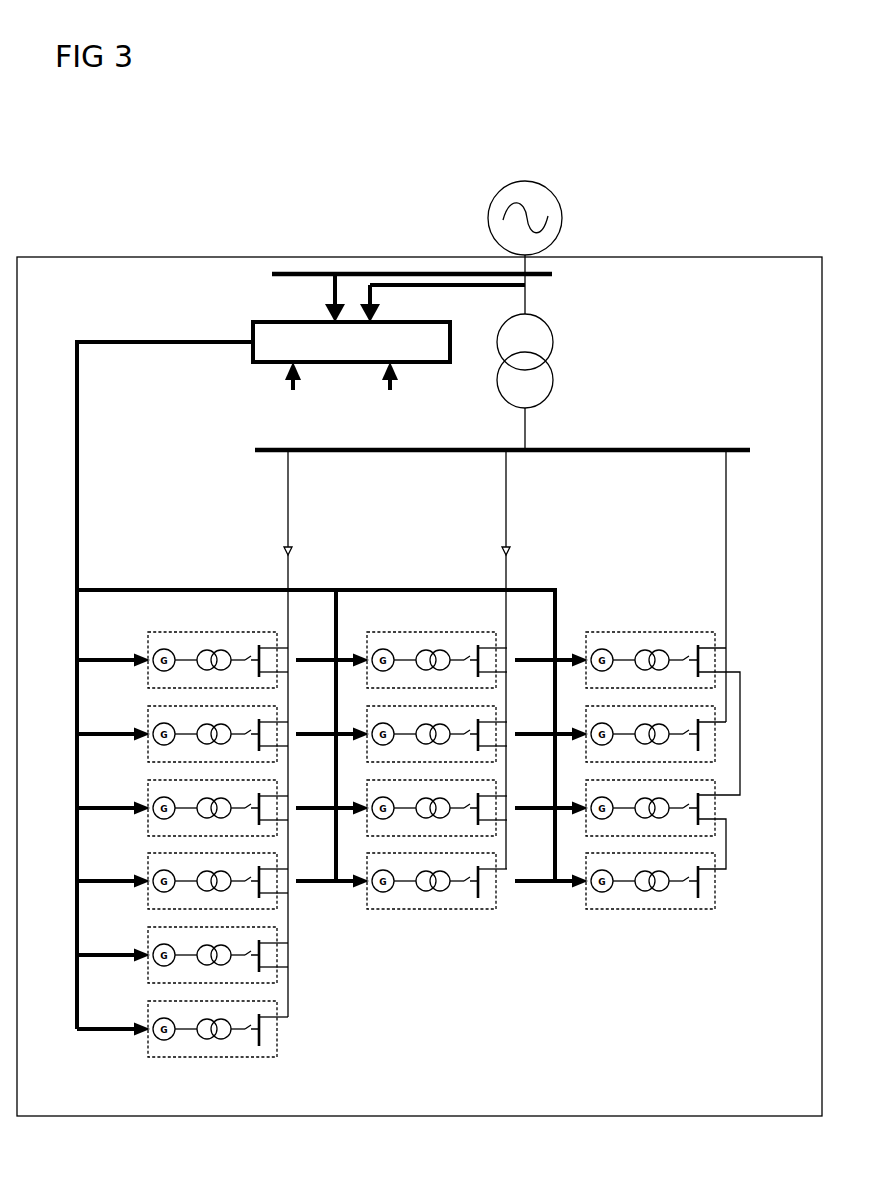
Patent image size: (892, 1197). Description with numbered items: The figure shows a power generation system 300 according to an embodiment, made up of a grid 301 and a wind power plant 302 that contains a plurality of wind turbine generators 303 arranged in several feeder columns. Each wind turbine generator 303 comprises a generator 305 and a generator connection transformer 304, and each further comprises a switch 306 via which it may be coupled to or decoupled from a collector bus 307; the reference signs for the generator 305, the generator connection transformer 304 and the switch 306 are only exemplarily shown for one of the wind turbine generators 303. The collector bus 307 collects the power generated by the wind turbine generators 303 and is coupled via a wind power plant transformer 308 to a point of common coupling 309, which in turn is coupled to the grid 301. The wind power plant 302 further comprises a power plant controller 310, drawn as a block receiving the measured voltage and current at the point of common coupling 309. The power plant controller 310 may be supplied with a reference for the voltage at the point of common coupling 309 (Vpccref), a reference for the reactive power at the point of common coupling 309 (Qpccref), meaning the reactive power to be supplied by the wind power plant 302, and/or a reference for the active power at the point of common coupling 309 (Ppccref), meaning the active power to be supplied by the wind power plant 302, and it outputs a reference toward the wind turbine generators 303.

The power generation system 300 is at (676, 78).
The grid 301 is at (552, 194).
The wind power plant 302 is at (718, 257).
The wind turbine generator 303 is at (270, 648).
The generator connection transformer 304 is at (216, 648).
The generator 305 is at (163, 648).
The switch 306 is at (248, 656).
The collector bus 307 is at (748, 450).
The wind power plant transformer 308 is at (552, 333).
The point of common coupling 309 is at (422, 272).
The power plant controller 310 is at (450, 332).